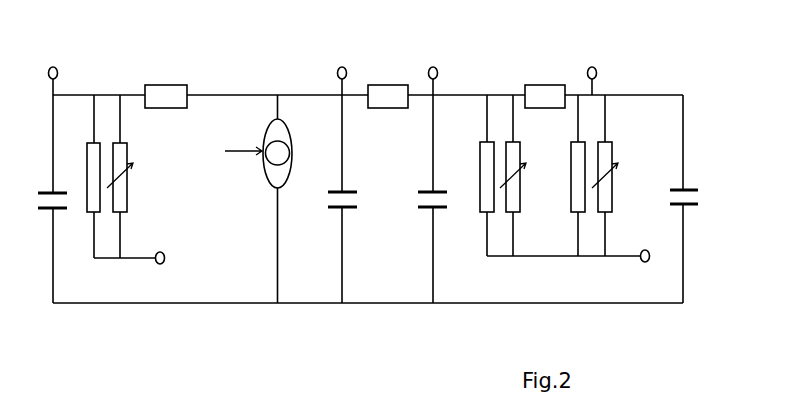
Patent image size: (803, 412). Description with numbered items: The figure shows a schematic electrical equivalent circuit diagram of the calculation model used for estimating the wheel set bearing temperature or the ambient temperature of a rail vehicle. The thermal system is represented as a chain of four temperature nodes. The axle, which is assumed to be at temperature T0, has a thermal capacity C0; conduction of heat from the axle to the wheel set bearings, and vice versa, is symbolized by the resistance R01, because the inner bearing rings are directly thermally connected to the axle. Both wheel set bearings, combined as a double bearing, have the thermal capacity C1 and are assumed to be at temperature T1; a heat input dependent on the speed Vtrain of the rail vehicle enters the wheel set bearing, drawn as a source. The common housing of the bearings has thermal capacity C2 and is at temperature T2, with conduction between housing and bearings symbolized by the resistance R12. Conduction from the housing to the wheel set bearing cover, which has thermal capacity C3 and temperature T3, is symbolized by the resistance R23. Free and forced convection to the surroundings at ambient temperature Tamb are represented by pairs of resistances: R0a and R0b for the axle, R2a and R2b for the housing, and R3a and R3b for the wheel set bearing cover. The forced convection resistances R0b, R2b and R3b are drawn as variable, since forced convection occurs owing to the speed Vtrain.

The axle temperature T0 is at (52, 60).
The wheel set bearing temperature T1 is at (341, 60).
The housing temperature T2 is at (432, 60).
The wheel set bearing cover temperature T3 is at (591, 68).
The heat conduction resistance between axle and wheel set bearing R01 is at (166, 87).
The heat conduction resistance between housing and wheel set bearing R12 is at (388, 87).
The heat conduction resistance between housing and wheel set bearing cover R23 is at (545, 87).
The thermal capacity of the axle C0 is at (56, 215).
The thermal capacity of the wheel set bearings C1 is at (346, 220).
The thermal capacity of the housing C2 is at (436, 220).
The thermal capacity of the wheel set bearing cover C3 is at (687, 216).
The free convection resistance of the axle R0a is at (86, 176).
The forced convection resistance of the axle R0b is at (122, 176).
The free convection resistance of the housing R2a is at (480, 175).
The forced convection resistance of the housing R2b is at (506, 175).
The free convection heat transfer resistance of the wheel set bearing cover R3a is at (571, 175).
The forced convection heat transfer resistance of the wheel set bearing cover R3b is at (598, 175).
The ambient temperature Tamb is at (418, 259).
The speed of the rail vehicle Vtrain is at (433, 153).